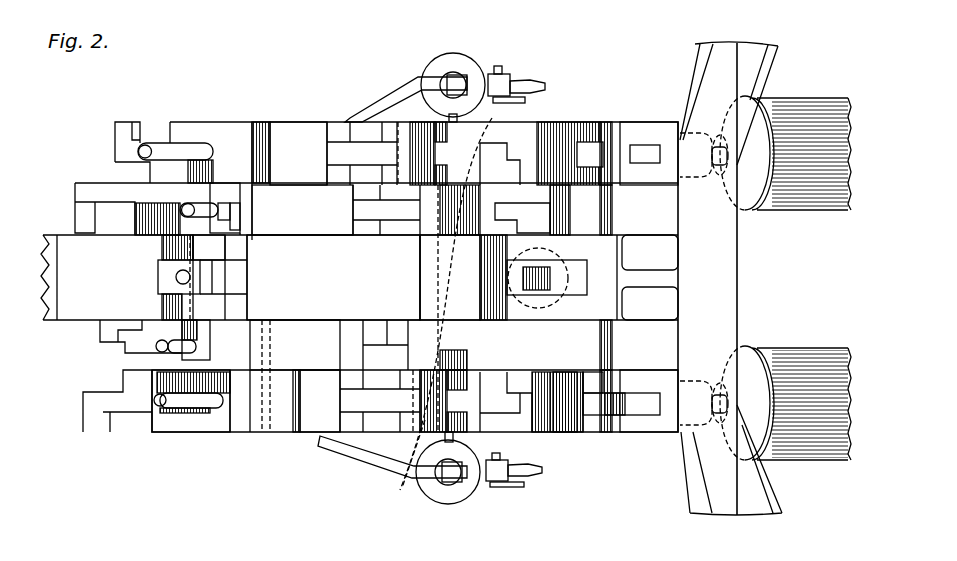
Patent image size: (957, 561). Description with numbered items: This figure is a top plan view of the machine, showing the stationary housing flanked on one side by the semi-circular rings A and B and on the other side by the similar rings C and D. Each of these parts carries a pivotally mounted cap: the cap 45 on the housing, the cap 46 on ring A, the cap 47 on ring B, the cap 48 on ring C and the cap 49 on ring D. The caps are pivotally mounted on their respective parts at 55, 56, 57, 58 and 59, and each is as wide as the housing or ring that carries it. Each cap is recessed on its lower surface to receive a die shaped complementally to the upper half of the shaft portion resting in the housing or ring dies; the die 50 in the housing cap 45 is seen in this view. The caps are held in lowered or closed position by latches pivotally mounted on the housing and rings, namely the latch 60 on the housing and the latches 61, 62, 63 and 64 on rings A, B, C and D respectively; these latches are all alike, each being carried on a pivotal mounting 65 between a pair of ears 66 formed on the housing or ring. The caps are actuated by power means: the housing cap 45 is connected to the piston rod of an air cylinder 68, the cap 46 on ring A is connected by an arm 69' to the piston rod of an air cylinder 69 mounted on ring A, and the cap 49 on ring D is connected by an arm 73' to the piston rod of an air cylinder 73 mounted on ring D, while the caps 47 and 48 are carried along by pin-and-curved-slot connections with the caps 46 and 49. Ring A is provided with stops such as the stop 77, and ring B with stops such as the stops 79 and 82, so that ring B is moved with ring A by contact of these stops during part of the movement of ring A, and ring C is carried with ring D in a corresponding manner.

The air cylinder 73 is at (463, 64).
The arm 73' is at (406, 91).
The pivotal mounting 59 is at (407, 153).
The pivotal mounting 58 is at (458, 294).
The ring D is at (617, 140).
The latch 64 is at (190, 157).
The cap 49 is at (273, 130).
The cap 48 is at (312, 205).
The latch 63 is at (188, 204).
The air cylinder 68 is at (558, 277).
The ring C is at (575, 190).
The ears 66 is at (205, 247).
The latch 60 is at (177, 276).
The pivotal mounting 55 is at (467, 271).
The pivotal mounting 65 is at (182, 308).
The cap 45 is at (333, 277).
The die 50 is at (565, 313).
The latch 62 is at (165, 348).
The ring B is at (560, 370).
The latch 61 is at (212, 412).
The cap 47 is at (307, 360).
The cap 46 is at (313, 412).
The stop 82 is at (92, 425).
The pivotal mounting 57 is at (432, 382).
The arm 69' is at (392, 465).
The pivotal mounting 56 is at (398, 464).
The air cylinder 69 is at (439, 485).
The stop 77 is at (567, 420).
The stop 79 is at (593, 387).
The ring A is at (615, 423).